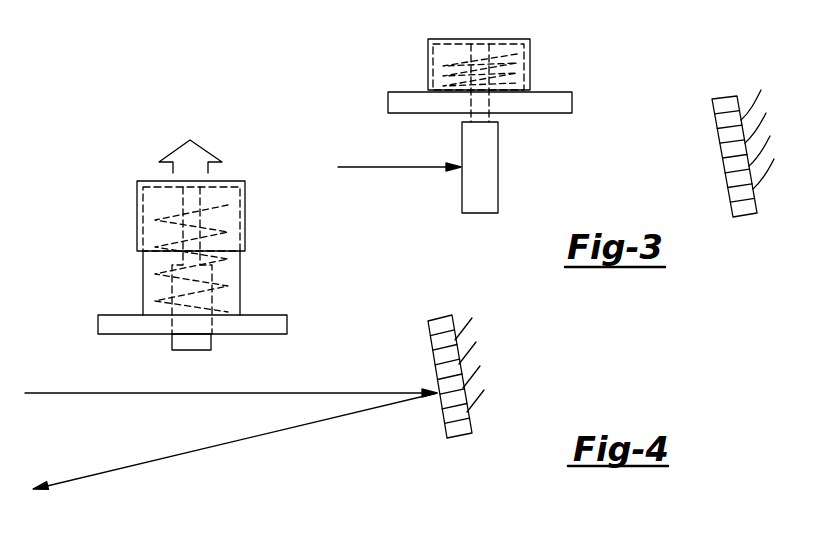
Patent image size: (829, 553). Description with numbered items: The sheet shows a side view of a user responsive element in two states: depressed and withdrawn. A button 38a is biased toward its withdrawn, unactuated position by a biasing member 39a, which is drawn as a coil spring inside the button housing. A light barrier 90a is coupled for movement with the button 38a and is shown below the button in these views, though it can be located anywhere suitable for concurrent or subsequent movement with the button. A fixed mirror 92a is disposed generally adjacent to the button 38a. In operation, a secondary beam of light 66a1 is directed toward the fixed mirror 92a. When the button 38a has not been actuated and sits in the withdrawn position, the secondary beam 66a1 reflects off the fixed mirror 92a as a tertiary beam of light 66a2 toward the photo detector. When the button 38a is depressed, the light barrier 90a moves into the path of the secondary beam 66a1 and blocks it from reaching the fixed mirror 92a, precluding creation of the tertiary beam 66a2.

In FIG. 3, the button 38a is at (428, 73).
In FIG. 4, the button 38a is at (143, 285).
In FIG. 3, the biasing member 39a is at (525, 66).
In FIG. 4, the biasing member 39a is at (142, 212).
In FIG. 3, the light barrier 90a is at (494, 188).
In FIG. 4, the light barrier 90a is at (211, 344).
In FIG. 3, the fixed mirror 92a is at (725, 100).
In FIG. 4, the fixed mirror 92a is at (440, 315).
In FIG. 3, the secondary beam of light 66a1 is at (357, 167).
In FIG. 4, the secondary beam of light 66a1 is at (355, 393).
In FIG. 4, the tertiary beam of light 66a2 is at (118, 466).